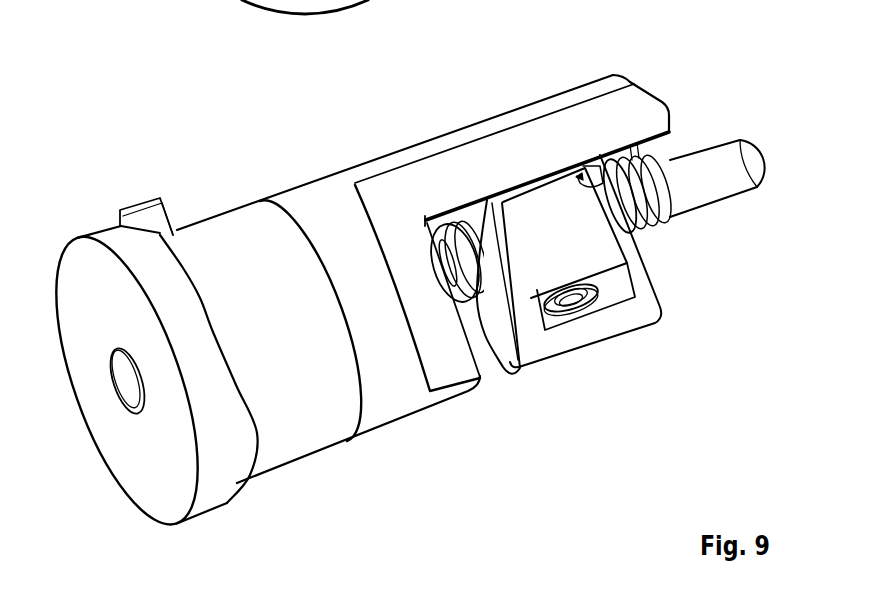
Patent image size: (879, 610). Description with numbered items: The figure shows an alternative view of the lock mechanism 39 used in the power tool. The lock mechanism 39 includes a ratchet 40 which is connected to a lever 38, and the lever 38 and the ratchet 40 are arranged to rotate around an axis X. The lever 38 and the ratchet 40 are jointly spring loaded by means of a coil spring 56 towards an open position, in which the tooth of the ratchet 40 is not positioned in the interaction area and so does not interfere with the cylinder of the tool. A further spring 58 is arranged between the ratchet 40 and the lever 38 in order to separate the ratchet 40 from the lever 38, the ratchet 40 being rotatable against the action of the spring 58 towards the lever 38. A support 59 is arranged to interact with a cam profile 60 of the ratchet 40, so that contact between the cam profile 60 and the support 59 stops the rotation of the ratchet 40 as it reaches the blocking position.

The lock mechanism 39 is at (117, 250).
The support 59 is at (503, 150).
The ratchet 40 is at (552, 223).
The cam profile 60 is at (582, 179).
The spring 58 is at (587, 310).
The lever 38 is at (650, 307).
The coil spring 56 is at (650, 170).
The axis X is at (737, 160).